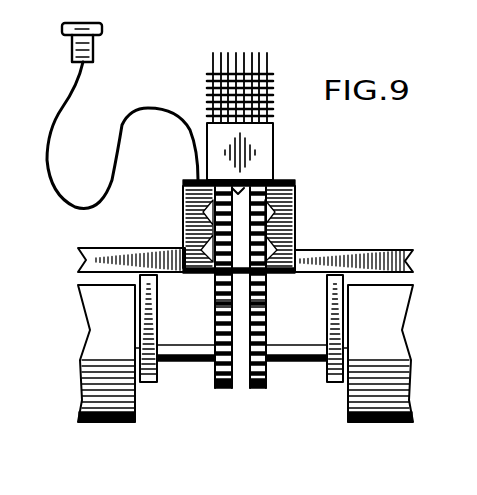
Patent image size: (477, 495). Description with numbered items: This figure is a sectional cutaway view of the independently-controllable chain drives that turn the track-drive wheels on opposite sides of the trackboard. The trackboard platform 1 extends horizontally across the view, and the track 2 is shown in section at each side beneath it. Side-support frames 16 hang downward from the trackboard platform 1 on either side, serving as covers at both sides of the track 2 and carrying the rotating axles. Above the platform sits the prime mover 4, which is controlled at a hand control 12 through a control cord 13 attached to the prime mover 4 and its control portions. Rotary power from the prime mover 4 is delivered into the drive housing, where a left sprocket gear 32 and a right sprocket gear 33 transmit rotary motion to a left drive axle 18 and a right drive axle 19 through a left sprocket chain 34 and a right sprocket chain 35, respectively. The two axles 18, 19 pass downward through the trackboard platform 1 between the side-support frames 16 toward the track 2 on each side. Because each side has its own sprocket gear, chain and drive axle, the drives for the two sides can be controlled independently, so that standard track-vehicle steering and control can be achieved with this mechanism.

The trackboard platform 1 is at (38, 249).
The track 2 is at (110, 423).
The prime mover 4 is at (217, 62).
The hand control 12 is at (62, 27).
The control cord 13 is at (53, 120).
The side-support frame 16 is at (153, 382).
The left drive axle 18 is at (188, 363).
The right drive axle 19 is at (297, 358).
The left sprocket gear 32 is at (203, 200).
The right sprocket gear 33 is at (297, 192).
The left sprocket chain 34 is at (215, 305).
The right sprocket chain 35 is at (266, 305).